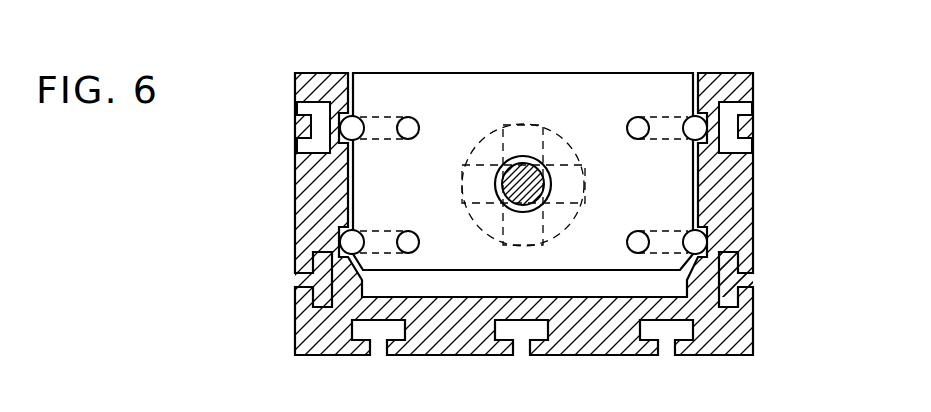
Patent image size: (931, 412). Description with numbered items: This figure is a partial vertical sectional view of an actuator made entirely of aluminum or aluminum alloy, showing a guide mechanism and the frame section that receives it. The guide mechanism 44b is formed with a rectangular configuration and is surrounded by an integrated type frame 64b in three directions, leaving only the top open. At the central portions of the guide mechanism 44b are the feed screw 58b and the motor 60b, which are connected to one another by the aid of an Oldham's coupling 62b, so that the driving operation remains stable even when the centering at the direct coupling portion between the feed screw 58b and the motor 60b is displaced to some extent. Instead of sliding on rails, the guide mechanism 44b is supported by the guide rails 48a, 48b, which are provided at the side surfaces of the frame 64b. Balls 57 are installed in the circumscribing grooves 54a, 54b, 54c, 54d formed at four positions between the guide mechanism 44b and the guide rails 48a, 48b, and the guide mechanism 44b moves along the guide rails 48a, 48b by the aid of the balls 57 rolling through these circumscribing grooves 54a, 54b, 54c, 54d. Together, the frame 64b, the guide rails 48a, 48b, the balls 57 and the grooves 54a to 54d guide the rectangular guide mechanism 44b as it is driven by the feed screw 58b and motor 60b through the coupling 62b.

The guide mechanism 44b is at (373, 45).
The balls 57 is at (412, 116).
The feed screw 58b is at (497, 163).
The motor 60b is at (565, 142).
The Oldham's coupling 62b is at (584, 178).
The circumscribing groove 54a is at (380, 118).
The circumscribing groove 54b is at (380, 228).
The circumscribing groove 54c is at (670, 118).
The circumscribing groove 54d is at (668, 231).
The guide rail 48a is at (297, 227).
The guide rail 48b is at (735, 212).
The frame 64b is at (399, 362).